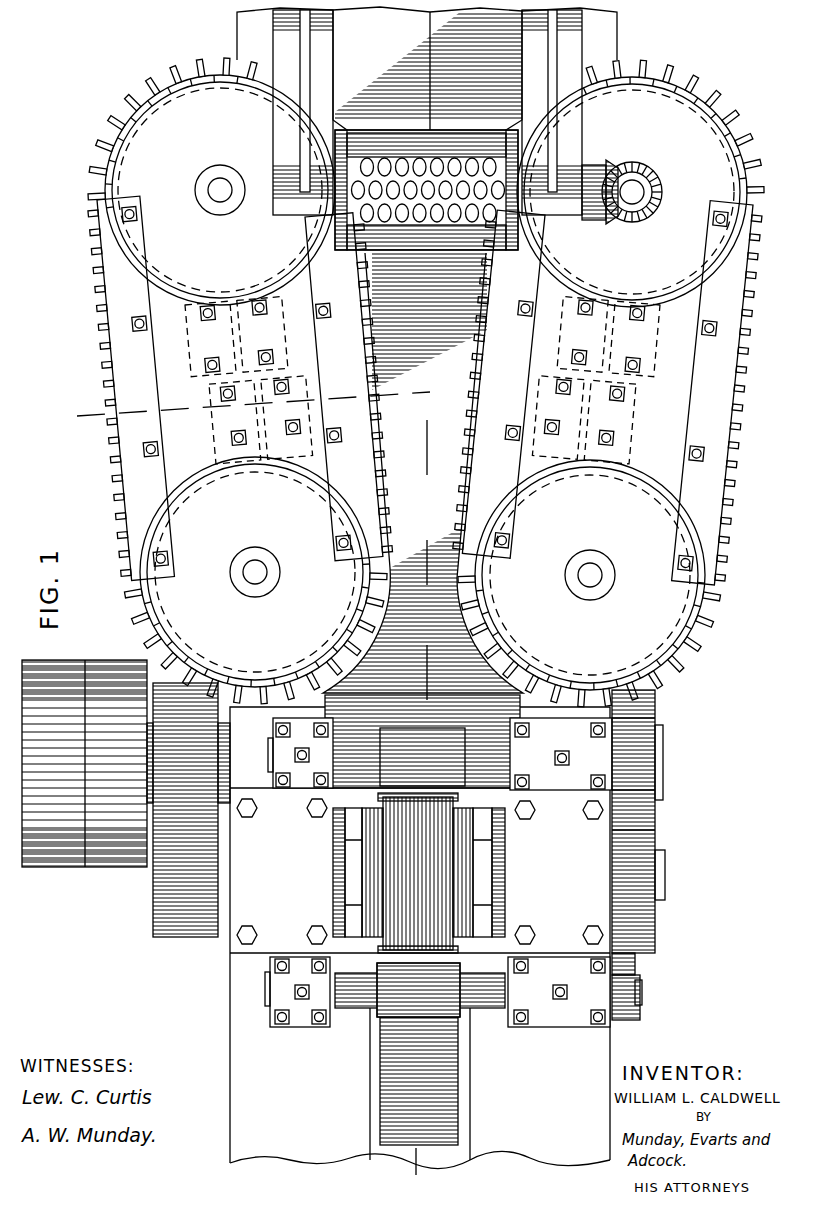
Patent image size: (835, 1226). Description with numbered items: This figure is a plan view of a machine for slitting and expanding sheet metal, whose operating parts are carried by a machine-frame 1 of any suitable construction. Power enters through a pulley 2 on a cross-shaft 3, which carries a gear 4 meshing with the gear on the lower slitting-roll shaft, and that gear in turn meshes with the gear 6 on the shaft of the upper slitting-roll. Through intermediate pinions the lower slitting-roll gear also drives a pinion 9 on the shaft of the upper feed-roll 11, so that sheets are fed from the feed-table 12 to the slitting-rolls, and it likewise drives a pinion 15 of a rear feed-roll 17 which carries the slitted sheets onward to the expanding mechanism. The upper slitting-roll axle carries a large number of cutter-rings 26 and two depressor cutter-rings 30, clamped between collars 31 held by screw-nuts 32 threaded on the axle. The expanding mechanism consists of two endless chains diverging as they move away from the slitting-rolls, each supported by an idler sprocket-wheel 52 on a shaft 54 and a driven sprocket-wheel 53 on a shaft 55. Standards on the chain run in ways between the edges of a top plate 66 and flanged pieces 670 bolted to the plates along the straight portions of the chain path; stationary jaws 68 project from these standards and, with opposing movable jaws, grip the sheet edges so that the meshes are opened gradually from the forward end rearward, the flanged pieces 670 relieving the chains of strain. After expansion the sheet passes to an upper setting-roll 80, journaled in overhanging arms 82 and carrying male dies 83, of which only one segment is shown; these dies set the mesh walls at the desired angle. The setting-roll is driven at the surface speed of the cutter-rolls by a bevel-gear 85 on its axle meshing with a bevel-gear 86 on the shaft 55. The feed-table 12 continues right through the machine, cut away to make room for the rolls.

The machine-frame 1 is at (298, 1086).
The pulley 2 is at (87, 763).
The cross-shaft 3 is at (421, 599).
The gear 4 is at (672, 740).
The gear 6 is at (653, 928).
The pinion 9 is at (640, 986).
The upper feed-roll 11 is at (435, 1005).
The feed-table 12 is at (423, 706).
The pinion 15 is at (648, 783).
The rear feed-roll 17 is at (445, 740).
The cutter-rings 26 is at (456, 905).
The depressor cutter-rings 30 is at (413, 872).
The collars or large washers 31 is at (378, 880).
The screw-nuts 32 is at (419, 872).
The sprocket-wheel 52 is at (240, 470).
The sprocket-wheel 53 is at (426, 182).
The shaft 54 is at (250, 572).
The shaft 55 is at (220, 190).
The top plate 66 is at (423, 582).
The stationary jaws 68 is at (113, 530).
The setting-roll 80 is at (427, 143).
The overhanging arms 82 is at (427, 112).
The male dies 83 is at (487, 193).
The bevel-gear 85 is at (600, 226).
The bevel-gear 86 is at (630, 163).
The flanged pieces 670 is at (425, 391).